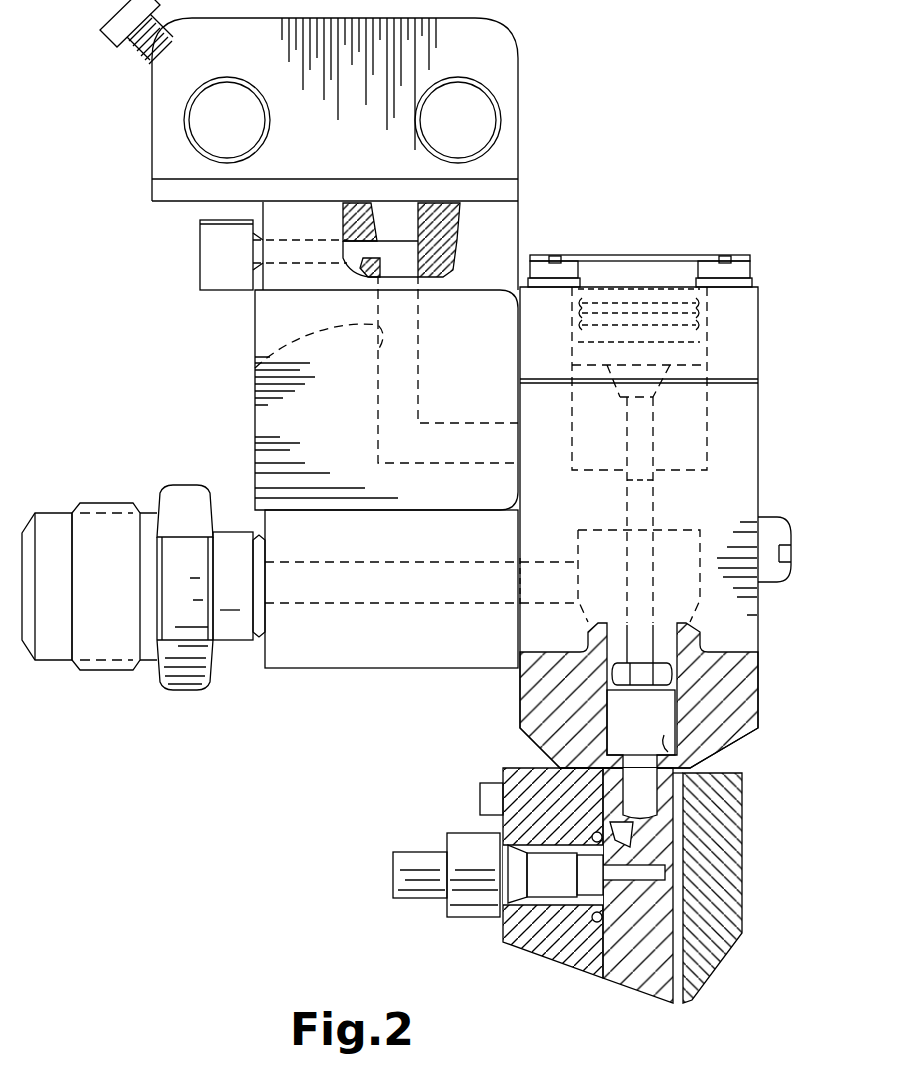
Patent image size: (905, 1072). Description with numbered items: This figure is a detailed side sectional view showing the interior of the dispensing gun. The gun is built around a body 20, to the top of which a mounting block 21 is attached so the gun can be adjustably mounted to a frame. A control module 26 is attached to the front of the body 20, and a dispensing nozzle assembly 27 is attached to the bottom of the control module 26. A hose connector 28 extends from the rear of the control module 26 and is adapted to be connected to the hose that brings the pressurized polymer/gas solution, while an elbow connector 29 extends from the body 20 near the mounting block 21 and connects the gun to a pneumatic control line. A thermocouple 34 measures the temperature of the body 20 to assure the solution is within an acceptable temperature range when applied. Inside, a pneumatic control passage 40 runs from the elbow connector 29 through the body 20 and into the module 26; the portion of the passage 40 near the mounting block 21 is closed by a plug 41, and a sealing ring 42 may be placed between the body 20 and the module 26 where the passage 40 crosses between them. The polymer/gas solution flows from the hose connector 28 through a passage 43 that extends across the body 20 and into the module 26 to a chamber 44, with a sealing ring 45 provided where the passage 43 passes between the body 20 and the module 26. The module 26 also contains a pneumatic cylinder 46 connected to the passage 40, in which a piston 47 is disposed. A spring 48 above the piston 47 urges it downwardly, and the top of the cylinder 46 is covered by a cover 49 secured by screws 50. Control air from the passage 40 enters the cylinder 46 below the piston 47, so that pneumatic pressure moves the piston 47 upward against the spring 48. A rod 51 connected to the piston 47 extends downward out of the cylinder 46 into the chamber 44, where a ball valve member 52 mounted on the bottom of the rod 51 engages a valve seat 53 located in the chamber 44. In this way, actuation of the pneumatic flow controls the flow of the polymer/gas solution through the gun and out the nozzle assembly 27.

The body 20 is at (295, 462).
The mounting block 21 is at (507, 65).
The control module 26 is at (737, 507).
The dispensing nozzle assembly 27 is at (568, 968).
The hose connector 28 is at (108, 645).
The elbow connector 29 is at (222, 260).
The thermocouple 34 is at (457, 845).
The pneumatic control passage 40 is at (255, 373).
The plug 41 is at (400, 218).
The sealing ring 42 is at (518, 418).
The passage 43 is at (378, 600).
The chamber 44 is at (690, 565).
The sealing ring 45 is at (520, 600).
The pneumatic cylinder 46 is at (700, 395).
The piston 47 is at (688, 352).
The spring 48 is at (700, 300).
The cover 49 is at (628, 272).
The screws 50 is at (565, 262).
The rod 51 is at (645, 490).
The ball valve member 52 is at (652, 715).
The valve seat 53 is at (668, 760).